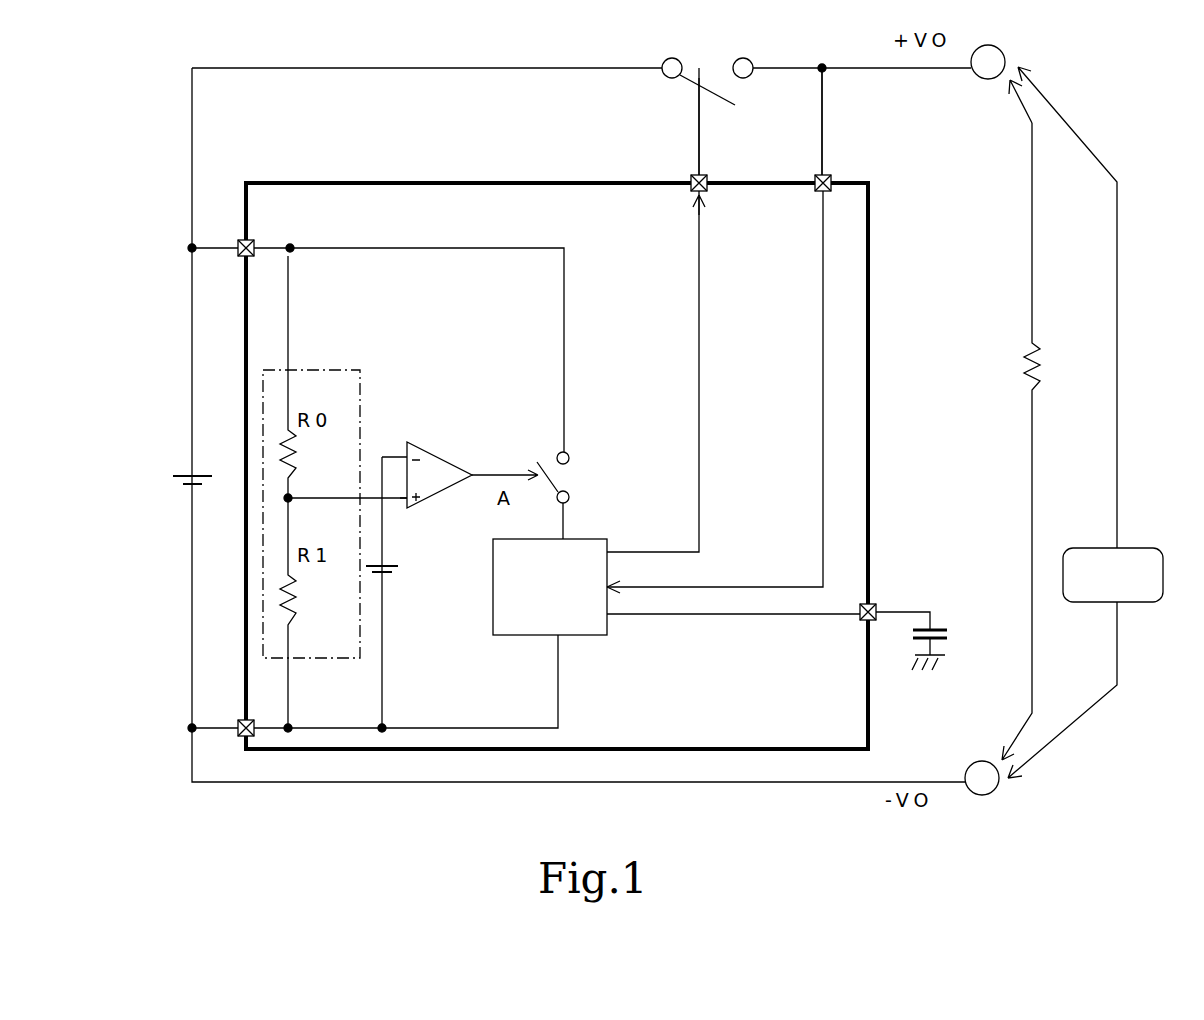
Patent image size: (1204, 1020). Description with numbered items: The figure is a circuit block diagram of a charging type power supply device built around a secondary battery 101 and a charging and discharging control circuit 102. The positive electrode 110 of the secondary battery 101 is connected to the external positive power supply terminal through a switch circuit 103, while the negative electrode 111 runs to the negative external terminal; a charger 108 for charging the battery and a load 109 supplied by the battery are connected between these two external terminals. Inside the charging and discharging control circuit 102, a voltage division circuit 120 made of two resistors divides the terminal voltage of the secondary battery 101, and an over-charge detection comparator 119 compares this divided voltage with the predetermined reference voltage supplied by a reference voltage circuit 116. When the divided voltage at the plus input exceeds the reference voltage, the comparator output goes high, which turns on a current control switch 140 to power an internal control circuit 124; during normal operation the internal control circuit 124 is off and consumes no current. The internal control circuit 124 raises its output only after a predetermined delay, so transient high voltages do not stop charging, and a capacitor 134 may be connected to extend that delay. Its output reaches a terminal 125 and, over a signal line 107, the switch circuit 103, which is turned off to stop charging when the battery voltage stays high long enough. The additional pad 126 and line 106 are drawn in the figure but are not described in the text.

The secondary battery 101 is at (160, 483).
The charging and discharging control circuit 102 is at (237, 590).
The switch circuit 103 is at (678, 87).
The voltage detection line 106 is at (830, 97).
The signal line 107 is at (685, 125).
The charger 108 is at (1063, 573).
The load 109 is at (1023, 397).
The positive electrode 110 is at (198, 177).
The negative electrode 111 is at (175, 700).
The reference voltage circuit 116 is at (405, 570).
The over-charge detection comparator 119 is at (432, 447).
The voltage division circuit 120 is at (310, 663).
The internal control circuit 124 is at (593, 645).
The terminal 125 is at (678, 200).
The voltage detection pad 126 is at (805, 200).
The capacitor 134 is at (943, 620).
The current control switch 140 is at (520, 458).